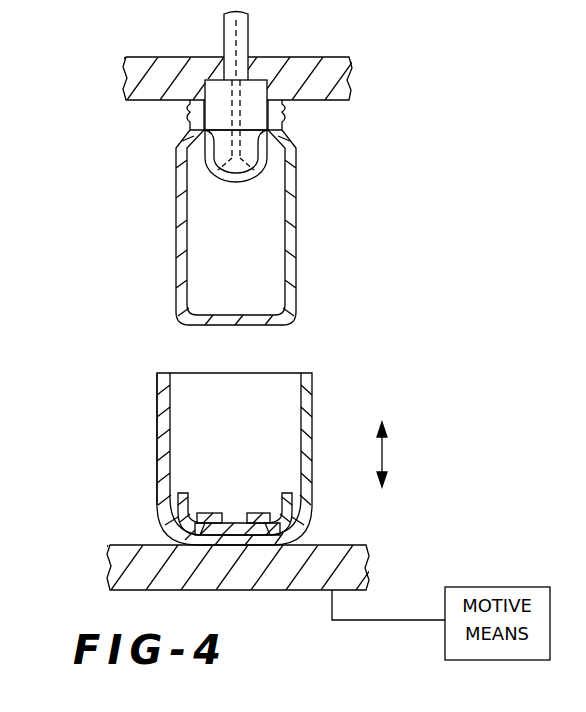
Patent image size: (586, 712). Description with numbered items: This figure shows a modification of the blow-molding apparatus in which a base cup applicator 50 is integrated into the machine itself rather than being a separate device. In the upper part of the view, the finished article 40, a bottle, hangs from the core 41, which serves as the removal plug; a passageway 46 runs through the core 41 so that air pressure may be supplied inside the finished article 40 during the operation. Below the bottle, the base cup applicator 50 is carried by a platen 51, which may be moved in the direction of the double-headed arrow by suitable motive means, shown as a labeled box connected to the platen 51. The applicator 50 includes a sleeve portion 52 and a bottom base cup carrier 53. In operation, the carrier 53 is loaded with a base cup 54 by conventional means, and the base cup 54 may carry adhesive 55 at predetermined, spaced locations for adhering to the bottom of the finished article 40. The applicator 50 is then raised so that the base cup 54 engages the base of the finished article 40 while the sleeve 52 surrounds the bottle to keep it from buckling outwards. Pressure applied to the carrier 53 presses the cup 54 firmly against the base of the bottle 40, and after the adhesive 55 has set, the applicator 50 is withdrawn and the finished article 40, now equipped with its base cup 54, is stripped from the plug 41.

The finished article 40 is at (292, 241).
The core 41 is at (253, 102).
The passageway 46 is at (233, 48).
The base cup applicator 50 is at (324, 400).
The platen 51 is at (128, 570).
The sleeve portion 52 is at (157, 412).
The bottom base cup carrier 53 is at (198, 537).
The base cup 54 is at (299, 514).
The adhesive 55 is at (250, 515).